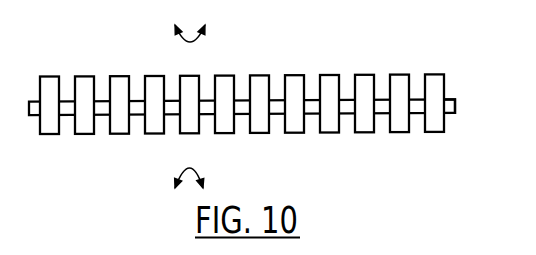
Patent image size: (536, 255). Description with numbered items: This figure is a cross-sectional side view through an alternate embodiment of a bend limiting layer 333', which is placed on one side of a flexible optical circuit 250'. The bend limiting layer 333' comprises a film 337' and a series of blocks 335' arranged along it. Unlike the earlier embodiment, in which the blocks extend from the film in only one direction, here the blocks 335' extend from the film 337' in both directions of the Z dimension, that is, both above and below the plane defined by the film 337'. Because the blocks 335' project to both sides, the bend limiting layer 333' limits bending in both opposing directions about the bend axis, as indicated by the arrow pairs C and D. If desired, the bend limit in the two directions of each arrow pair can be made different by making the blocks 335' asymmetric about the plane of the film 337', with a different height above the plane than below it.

The flexible optical circuit 250' is at (264, 114).
The film 337' is at (242, 134).
The blocks 335' is at (242, 131).
The bend limiting layer 333' is at (472, 130).
The arrow pair D is at (191, 42).
The arrow pair C is at (193, 169).